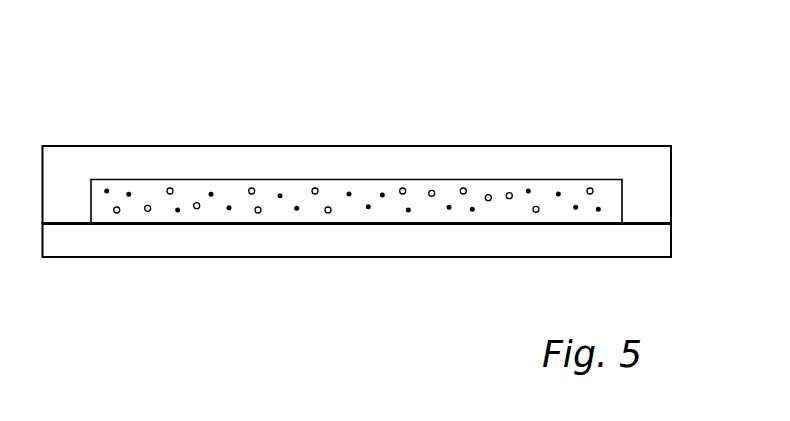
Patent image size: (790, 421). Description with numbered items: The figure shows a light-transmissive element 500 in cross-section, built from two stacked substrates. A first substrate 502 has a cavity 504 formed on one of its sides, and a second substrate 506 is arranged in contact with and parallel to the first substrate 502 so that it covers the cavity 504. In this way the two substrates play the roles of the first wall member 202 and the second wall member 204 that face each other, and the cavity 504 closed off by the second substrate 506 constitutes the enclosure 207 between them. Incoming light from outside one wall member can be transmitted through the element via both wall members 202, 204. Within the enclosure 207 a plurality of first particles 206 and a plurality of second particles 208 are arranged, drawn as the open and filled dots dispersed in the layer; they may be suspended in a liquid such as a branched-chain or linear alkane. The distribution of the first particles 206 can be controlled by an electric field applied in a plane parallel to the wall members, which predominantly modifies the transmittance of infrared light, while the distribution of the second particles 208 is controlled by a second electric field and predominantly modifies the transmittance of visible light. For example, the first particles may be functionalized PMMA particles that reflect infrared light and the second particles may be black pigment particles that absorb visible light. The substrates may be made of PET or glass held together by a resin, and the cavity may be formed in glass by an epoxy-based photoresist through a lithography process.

The light-transmissive element 500 is at (392, 170).
The first substrate 502 is at (671, 178).
The cavity 504 is at (612, 192).
The second substrate 506 is at (671, 243).
The first wall member 202 is at (137, 180).
The second wall member 204 is at (138, 223).
The first particles 206 is at (252, 188).
The enclosure 207 is at (349, 197).
The second particles 208 is at (178, 212).